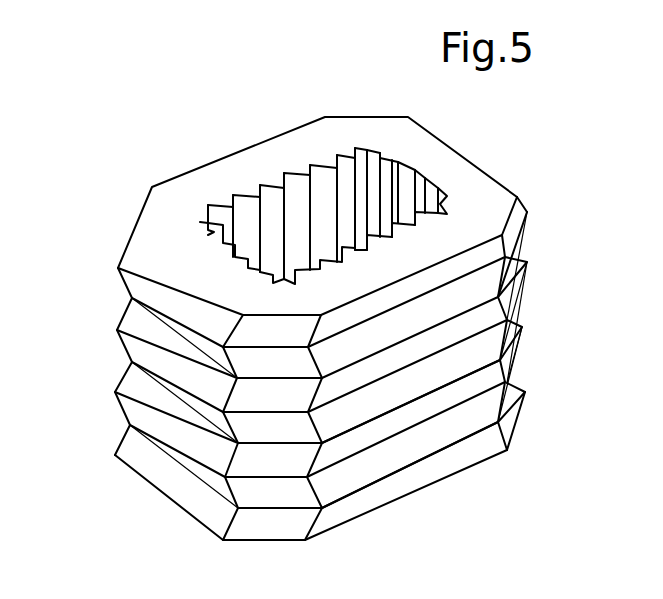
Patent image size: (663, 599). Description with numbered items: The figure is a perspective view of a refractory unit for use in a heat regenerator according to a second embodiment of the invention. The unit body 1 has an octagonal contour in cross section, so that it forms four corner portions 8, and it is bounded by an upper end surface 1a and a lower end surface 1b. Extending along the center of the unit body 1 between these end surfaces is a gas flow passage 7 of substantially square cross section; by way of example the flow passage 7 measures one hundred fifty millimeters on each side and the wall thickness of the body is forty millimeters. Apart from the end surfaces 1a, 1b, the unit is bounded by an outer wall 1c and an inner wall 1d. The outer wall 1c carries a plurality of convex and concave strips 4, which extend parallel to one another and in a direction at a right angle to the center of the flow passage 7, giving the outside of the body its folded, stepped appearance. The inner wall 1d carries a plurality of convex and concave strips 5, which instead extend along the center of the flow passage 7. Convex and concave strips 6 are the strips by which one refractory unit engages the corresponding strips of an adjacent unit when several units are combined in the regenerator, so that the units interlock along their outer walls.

The unit body 1 is at (442, 143).
The upper end surface 1a is at (158, 210).
The lower end surface 1b is at (374, 509).
The outer wall 1c is at (447, 310).
The inner wall 1d is at (205, 232).
The convex and concave strips 4 is at (448, 432).
The convex and concave strips 5 is at (287, 207).
The convex and concave strips 6 is at (228, 129).
The gas flow passage 7 is at (392, 183).
The corner portions 8 is at (527, 327).